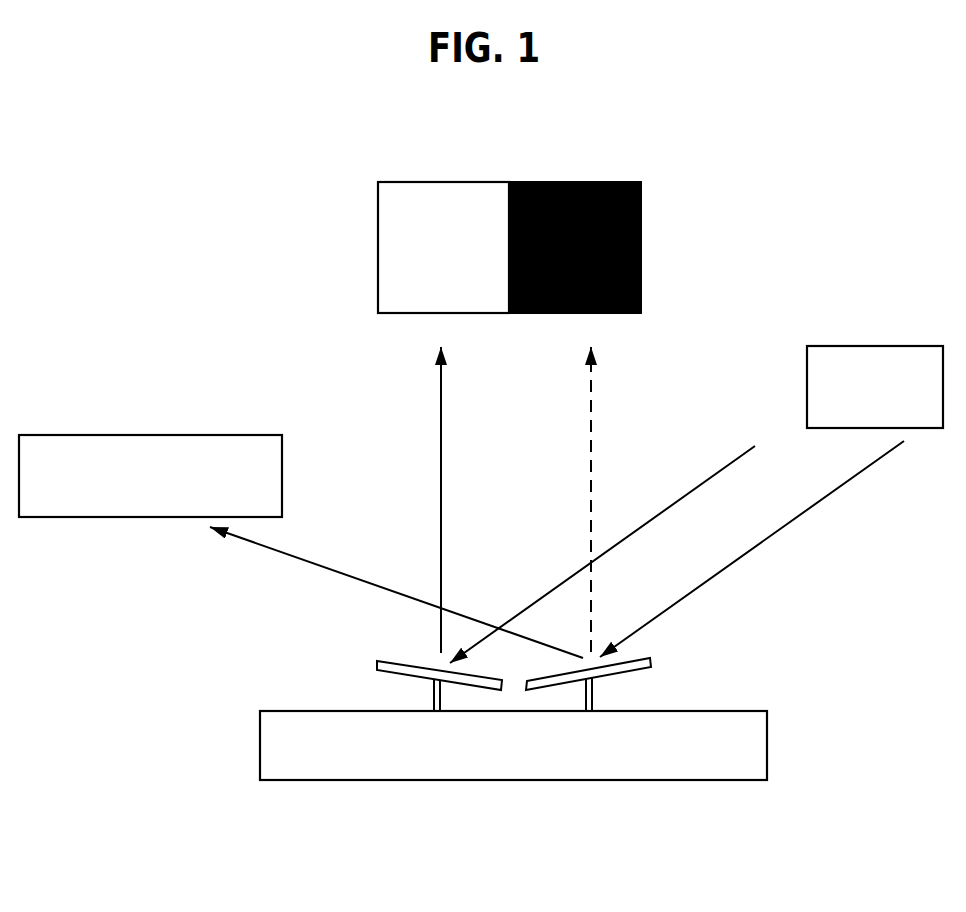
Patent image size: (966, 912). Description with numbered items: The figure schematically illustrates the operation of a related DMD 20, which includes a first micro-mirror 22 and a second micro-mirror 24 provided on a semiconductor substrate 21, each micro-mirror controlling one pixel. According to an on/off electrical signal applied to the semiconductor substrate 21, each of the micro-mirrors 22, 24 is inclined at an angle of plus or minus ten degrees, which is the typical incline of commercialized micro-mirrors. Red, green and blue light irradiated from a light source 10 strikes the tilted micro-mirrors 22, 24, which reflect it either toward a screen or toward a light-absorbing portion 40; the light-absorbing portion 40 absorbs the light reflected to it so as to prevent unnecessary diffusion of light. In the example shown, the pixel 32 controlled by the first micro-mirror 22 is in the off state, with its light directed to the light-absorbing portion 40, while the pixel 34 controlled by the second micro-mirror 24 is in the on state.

The light source 10 is at (873, 345).
The DMD 20 is at (783, 692).
The semiconductor substrate 21 is at (617, 780).
The first micro-mirror 22 is at (652, 662).
The second micro-mirror 24 is at (377, 665).
The pixel 32 is at (598, 181).
The pixel 34 is at (437, 182).
The light-absorbing portion 40 is at (155, 434).